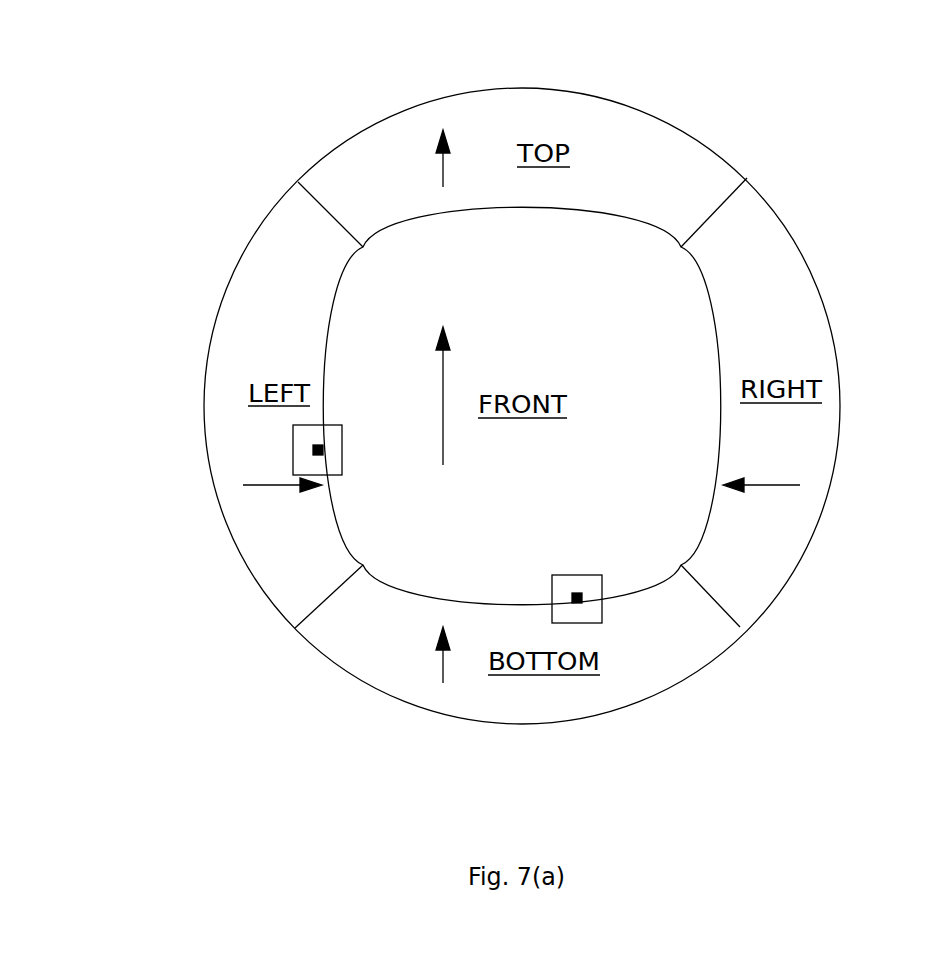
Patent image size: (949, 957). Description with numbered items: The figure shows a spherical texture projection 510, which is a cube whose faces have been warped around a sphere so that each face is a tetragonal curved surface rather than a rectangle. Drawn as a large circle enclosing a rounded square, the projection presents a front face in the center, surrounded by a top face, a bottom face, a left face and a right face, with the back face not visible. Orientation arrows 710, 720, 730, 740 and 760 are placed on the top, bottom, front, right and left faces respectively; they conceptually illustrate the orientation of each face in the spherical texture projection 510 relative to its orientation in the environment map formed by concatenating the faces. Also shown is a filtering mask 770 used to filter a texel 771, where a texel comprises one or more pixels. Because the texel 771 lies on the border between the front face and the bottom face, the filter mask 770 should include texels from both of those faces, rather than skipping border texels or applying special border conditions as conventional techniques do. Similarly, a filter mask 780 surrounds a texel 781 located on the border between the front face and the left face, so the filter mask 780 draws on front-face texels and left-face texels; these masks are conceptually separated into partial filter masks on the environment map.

The spherical texture projection 510 is at (747, 178).
The orientation arrow 710 is at (443, 167).
The orientation arrow 720 is at (443, 667).
The orientation arrow 730 is at (443, 450).
The orientation arrow 740 is at (797, 485).
The orientation arrow 760 is at (267, 485).
The filtering mask 770 is at (583, 573).
The texel 771 is at (582, 600).
The filter mask 780 is at (338, 435).
The texel 781 is at (318, 445).